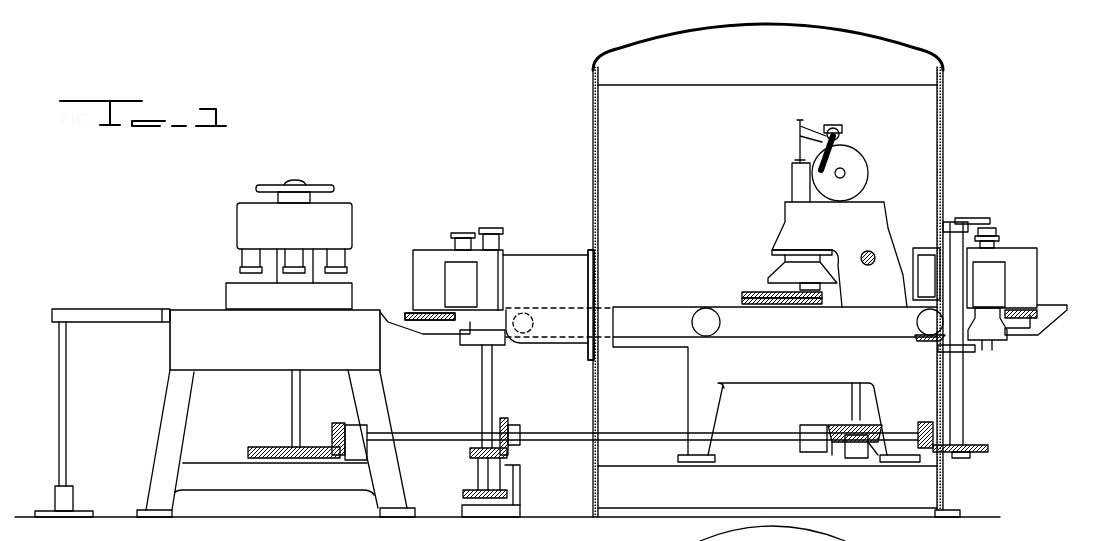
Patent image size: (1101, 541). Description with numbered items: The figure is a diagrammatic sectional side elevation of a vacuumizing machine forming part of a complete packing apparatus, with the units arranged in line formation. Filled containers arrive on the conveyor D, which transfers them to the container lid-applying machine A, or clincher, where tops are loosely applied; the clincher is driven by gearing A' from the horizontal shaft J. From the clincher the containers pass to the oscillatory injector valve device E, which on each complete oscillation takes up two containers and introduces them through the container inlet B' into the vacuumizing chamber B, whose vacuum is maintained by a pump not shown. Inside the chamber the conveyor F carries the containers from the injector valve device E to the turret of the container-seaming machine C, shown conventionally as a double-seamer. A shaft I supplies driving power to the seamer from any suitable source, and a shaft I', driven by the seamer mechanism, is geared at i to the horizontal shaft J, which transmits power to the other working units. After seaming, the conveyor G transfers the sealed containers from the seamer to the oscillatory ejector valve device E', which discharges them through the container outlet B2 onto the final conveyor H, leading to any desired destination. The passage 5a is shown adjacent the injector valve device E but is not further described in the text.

The container lid-applying machine A is at (289, 229).
The gearing A' is at (307, 438).
The vacuumizing chamber B is at (768, 270).
The container inlet B' is at (614, 305).
The container outlet B2 is at (936, 247).
The container-seaming machine C is at (824, 213).
The conveyor D is at (120, 311).
The oscillatory injector valve device E is at (442, 328).
The oscillatory ejector valve device E' is at (987, 315).
The conveyor F is at (565, 342).
The conveyor G is at (801, 338).
The final conveyor H is at (1060, 302).
The shaft I is at (873, 292).
The shaft I' is at (841, 420).
The horizontal shaft J is at (658, 437).
The gearing i is at (840, 442).
The cylinder 5a is at (552, 262).